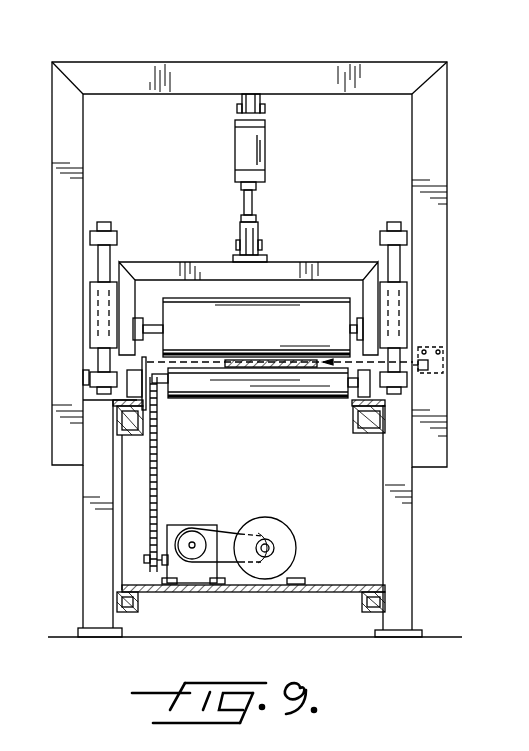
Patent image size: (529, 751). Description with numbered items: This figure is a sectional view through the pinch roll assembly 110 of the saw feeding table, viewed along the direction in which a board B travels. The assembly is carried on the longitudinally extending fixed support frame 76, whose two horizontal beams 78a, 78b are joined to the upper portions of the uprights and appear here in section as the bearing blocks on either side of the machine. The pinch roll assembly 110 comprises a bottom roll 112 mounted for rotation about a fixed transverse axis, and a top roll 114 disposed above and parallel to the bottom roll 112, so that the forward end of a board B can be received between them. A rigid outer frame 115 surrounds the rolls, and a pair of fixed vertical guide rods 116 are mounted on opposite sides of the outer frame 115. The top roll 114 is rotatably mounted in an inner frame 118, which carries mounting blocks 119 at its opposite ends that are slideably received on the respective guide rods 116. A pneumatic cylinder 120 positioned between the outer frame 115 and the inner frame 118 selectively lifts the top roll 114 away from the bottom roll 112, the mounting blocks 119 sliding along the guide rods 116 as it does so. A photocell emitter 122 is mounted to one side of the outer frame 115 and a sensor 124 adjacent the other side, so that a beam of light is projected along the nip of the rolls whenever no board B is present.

The outer frame 115 is at (172, 70).
The pinch roll assembly 110 is at (200, 170).
The pneumatic cylinder 120 is at (268, 150).
The inner frame 118 is at (290, 264).
The vertical guide rods 116 is at (108, 258).
The mounting blocks 119 is at (90, 305).
The top roll 114 is at (338, 332).
The board B is at (233, 355).
The bottom roll 112 is at (246, 388).
The sensor 124 is at (176, 380).
The horizontal beam 78a is at (142, 420).
The horizontal beam 78b is at (353, 419).
The photocell emitter 122 is at (432, 375).
The fixed support frame 76 is at (80, 498).